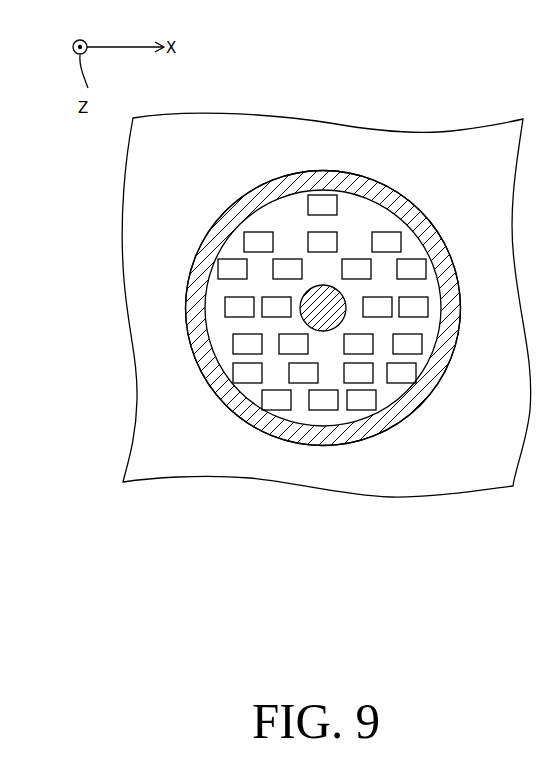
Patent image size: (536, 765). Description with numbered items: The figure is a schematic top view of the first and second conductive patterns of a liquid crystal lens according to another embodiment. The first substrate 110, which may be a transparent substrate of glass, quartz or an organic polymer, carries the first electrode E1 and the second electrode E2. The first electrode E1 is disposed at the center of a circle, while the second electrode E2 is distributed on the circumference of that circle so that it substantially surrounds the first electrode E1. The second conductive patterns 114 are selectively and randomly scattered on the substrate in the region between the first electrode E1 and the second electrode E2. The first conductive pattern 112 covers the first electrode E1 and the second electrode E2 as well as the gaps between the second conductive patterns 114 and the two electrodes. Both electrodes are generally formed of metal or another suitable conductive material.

The first substrate 110 is at (352, 127).
The first conductive pattern 112 is at (420, 358).
The second conductive patterns 114 is at (302, 380).
The first electrode E1 is at (323, 331).
The second electrode E2 is at (398, 423).